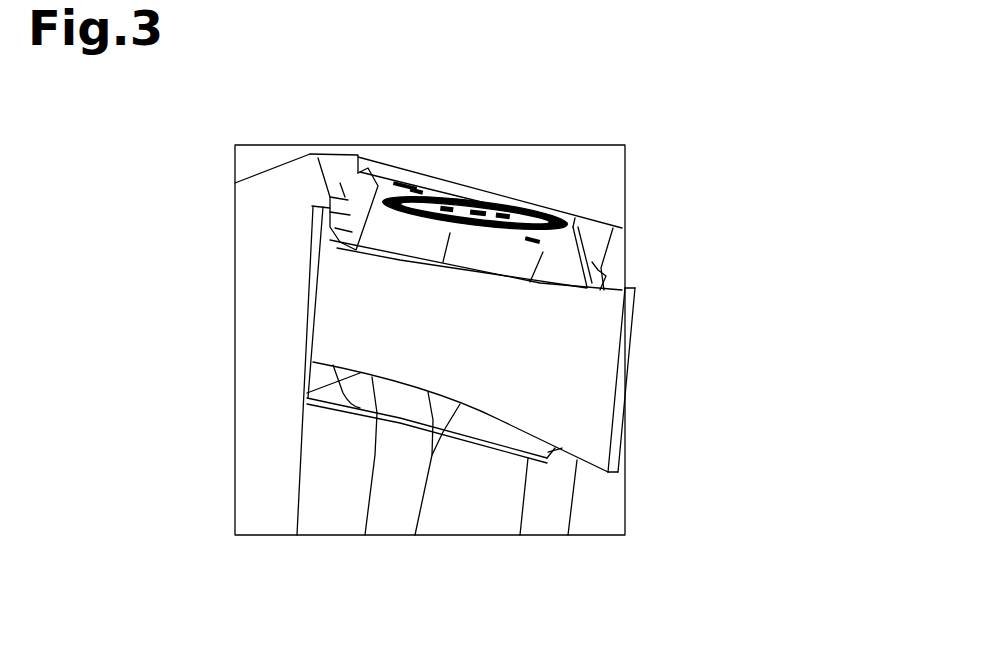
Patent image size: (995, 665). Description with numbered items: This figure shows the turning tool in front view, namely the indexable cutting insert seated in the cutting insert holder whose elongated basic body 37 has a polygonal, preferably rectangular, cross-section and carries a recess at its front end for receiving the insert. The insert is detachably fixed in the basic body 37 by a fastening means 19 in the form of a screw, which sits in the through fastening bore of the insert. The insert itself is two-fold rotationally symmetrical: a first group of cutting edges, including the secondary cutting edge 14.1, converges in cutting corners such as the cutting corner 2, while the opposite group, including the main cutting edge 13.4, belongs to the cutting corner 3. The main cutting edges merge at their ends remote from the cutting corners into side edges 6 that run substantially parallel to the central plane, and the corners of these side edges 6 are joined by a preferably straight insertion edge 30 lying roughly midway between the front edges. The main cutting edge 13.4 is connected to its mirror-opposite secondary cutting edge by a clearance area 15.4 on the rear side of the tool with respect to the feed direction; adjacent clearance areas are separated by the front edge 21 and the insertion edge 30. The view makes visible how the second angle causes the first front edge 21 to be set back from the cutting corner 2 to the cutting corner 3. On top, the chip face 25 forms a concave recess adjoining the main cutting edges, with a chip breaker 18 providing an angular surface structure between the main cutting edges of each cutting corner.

The cutting corner 2 is at (635, 287).
The cutting corner 3 is at (618, 471).
The side edges 6 is at (389, 250).
The main cutting edge 13.4 is at (415, 535).
The secondary cutting edge 14.1 is at (557, 272).
The clearance area 15.4 is at (478, 361).
The chip breaker 18 is at (423, 417).
The fastening means 19 is at (463, 203).
The front edge 21 is at (628, 360).
The chip face 25 is at (460, 440).
The insertion edge 30 is at (312, 291).
The basic body 37 is at (252, 474).